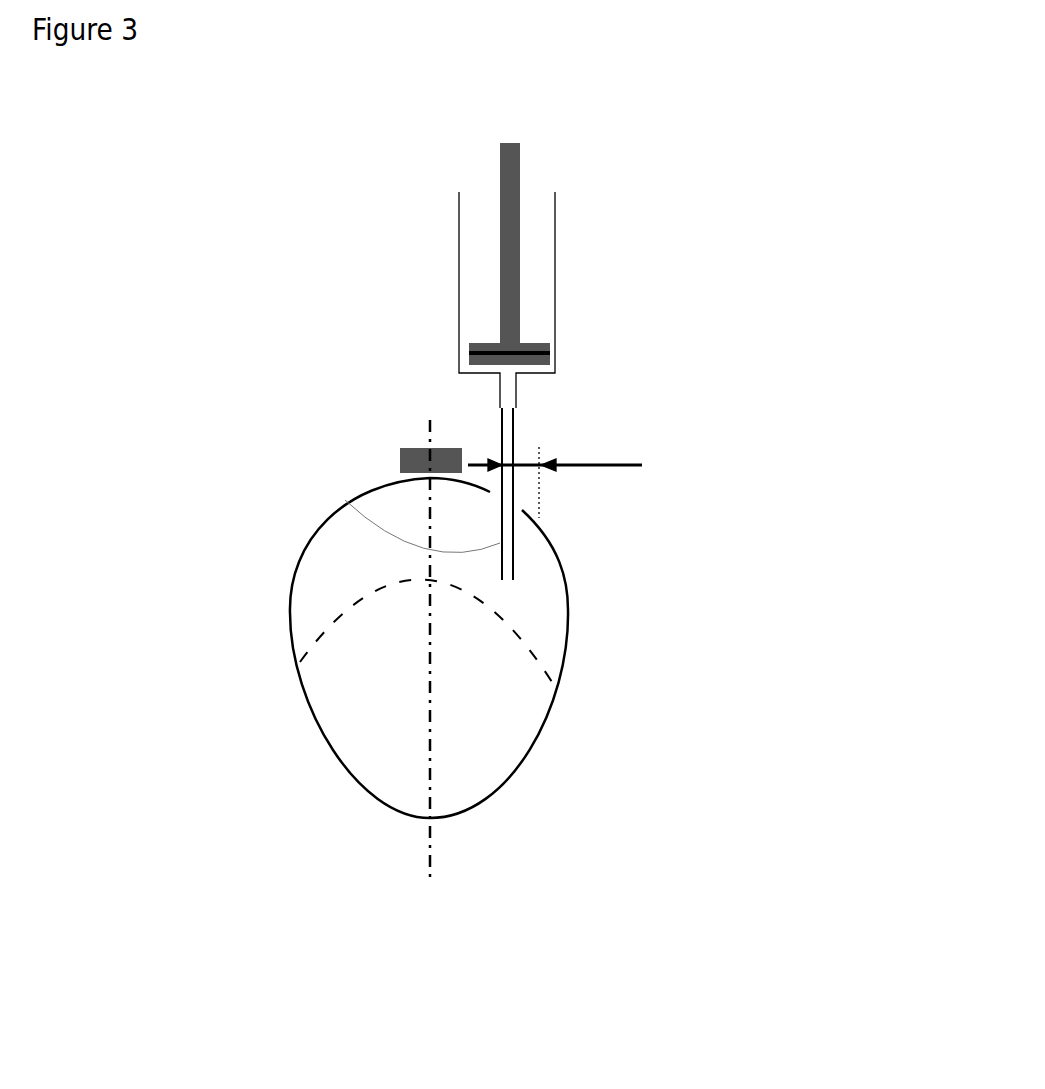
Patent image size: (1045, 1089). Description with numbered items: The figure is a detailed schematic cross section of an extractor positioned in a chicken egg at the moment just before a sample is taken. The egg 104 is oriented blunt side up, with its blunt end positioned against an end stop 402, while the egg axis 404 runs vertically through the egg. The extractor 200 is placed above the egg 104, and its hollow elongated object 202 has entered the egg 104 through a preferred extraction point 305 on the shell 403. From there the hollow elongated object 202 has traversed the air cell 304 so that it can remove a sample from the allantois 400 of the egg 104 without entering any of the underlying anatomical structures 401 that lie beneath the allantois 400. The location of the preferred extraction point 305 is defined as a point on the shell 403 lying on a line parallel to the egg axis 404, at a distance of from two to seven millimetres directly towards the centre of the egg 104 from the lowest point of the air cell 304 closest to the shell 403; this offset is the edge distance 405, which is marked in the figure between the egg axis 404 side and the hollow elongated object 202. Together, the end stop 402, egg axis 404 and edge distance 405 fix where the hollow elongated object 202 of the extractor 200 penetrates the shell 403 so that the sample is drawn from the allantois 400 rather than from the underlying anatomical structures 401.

The egg 104 is at (258, 832).
The extractor 200 is at (600, 590).
The hollow elongated object 202 is at (503, 435).
The air cell 304 is at (407, 503).
The preferred extraction point 305 is at (517, 505).
The allantois 400 is at (332, 562).
The underlying anatomical structures 401 is at (378, 725).
The end stop 402 is at (402, 460).
The shell 403 is at (567, 643).
The egg axis 404 is at (432, 674).
The edge distance 405 is at (578, 462).